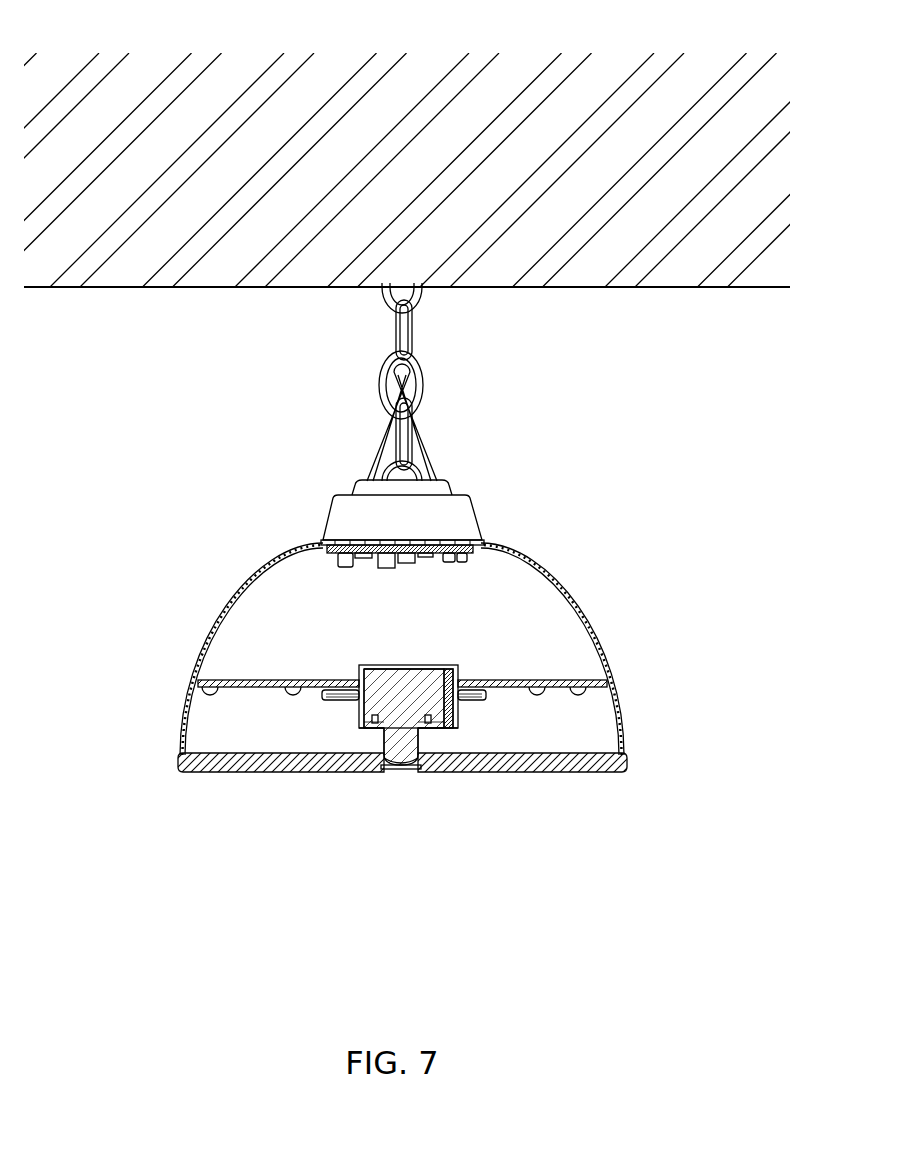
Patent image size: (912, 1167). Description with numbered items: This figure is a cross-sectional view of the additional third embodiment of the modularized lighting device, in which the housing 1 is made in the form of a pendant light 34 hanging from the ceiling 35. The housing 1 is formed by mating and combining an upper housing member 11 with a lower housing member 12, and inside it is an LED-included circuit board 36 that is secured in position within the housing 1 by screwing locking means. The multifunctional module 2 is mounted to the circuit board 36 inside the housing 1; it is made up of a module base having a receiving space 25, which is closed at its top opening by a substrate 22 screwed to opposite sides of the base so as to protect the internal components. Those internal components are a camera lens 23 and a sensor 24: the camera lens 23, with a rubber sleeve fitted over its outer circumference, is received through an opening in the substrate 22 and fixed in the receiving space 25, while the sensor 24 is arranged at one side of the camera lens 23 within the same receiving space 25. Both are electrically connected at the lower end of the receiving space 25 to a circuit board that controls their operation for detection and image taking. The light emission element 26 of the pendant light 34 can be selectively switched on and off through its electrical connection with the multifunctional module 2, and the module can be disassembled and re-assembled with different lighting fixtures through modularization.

The housing 1 is at (422, 659).
The upper housing member 11 is at (422, 796).
The lower housing member 12 is at (233, 601).
The multifunctional module 2 is at (402, 750).
The substrate 22 is at (384, 752).
The camera lens 23 is at (385, 769).
The sensor 24 is at (458, 717).
The receiving space 25 is at (362, 728).
The light emission element 26 is at (580, 697).
The pendant light 34 is at (214, 780).
The ceiling 35 is at (265, 68).
The circuit board 36 is at (429, 617).